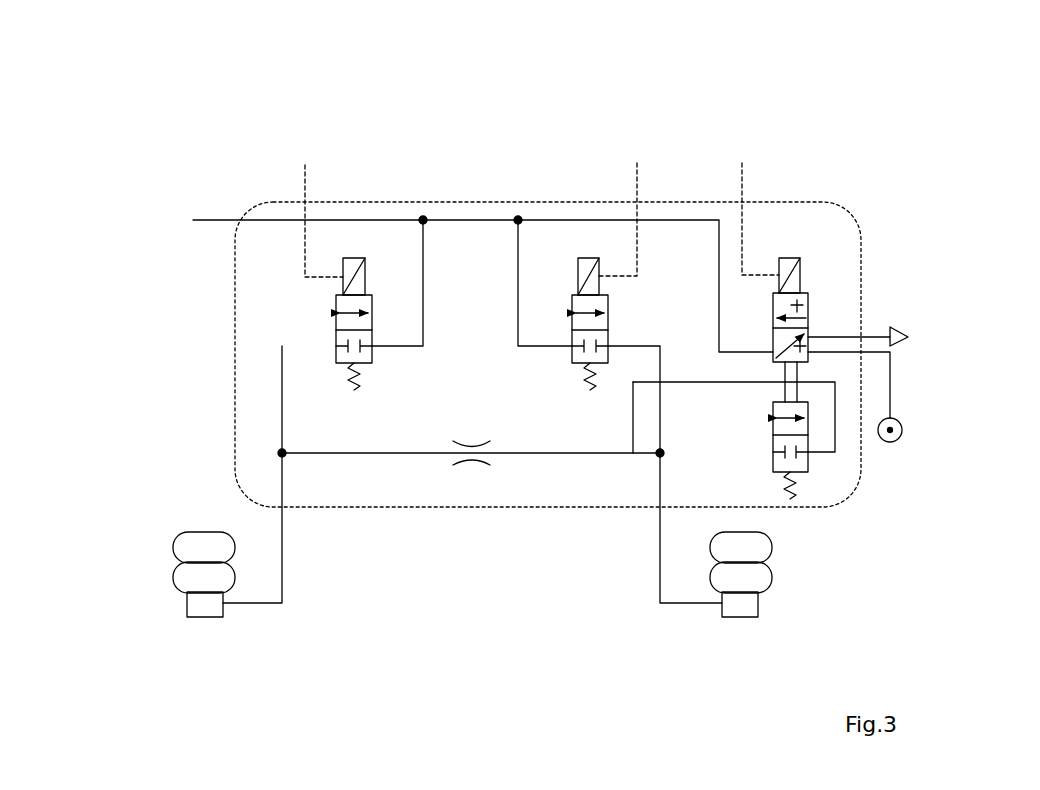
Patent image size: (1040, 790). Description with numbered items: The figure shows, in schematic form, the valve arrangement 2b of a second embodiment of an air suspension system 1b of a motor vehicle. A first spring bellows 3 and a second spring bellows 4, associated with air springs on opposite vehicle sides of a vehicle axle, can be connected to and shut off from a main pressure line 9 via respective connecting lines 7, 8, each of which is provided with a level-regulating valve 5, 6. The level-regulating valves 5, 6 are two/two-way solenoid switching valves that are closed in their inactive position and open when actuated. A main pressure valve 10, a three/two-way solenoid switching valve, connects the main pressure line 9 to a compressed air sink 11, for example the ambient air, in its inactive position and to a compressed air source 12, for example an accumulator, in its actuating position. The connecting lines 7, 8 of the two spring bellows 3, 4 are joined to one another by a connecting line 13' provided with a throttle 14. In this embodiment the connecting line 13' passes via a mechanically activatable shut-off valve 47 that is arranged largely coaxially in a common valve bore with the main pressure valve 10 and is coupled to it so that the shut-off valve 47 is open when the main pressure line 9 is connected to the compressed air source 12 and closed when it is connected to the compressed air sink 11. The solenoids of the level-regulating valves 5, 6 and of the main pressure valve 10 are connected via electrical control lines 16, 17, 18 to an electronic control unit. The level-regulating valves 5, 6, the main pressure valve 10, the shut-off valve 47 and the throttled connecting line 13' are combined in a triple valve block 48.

The air suspension system 1b is at (168, 143).
The valve arrangement 2b is at (168, 143).
The first spring bellows 3 is at (203, 550).
The second spring bellows 4 is at (740, 548).
The first level-regulating valve 5 is at (320, 323).
The second level-regulating valve 6 is at (593, 240).
The connecting line 7 is at (422, 285).
The connecting line 8 is at (520, 285).
The main pressure line 9 is at (213, 218).
The main pressure valve 10 is at (820, 325).
The compressed air sink 11 is at (908, 337).
The compressed air source 12 is at (903, 430).
The connecting line 13' is at (472, 518).
The throttle 14 is at (470, 472).
The electrical control line 16 is at (306, 182).
The electrical control line 17 is at (637, 183).
The electrical control line 18 is at (742, 183).
The shut-off valve 47 is at (820, 443).
The triple valve block 48 is at (235, 392).